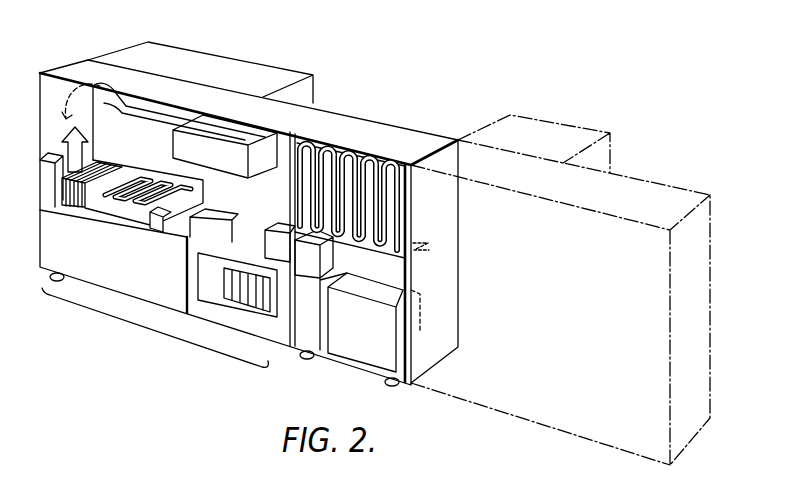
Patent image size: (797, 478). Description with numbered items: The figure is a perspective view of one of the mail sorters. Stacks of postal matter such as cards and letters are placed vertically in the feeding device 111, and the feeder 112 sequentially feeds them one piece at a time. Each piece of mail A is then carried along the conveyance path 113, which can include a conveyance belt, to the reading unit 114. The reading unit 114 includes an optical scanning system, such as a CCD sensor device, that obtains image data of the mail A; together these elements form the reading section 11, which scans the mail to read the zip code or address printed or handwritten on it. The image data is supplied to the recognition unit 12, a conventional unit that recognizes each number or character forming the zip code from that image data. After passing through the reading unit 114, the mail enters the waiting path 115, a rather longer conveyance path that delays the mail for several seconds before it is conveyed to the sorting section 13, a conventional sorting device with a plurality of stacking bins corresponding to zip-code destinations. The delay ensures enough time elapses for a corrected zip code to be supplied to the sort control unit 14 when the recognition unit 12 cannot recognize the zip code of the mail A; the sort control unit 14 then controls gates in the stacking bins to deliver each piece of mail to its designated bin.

The reading section 11 is at (138, 358).
The recognition unit 12 is at (248, 73).
The sorting section 13 is at (502, 391).
The sort control unit 14 is at (553, 129).
The feeding device 111 is at (100, 209).
The feeder 112 is at (90, 165).
The conveyance path 113 is at (142, 112).
The reading unit 114 is at (222, 157).
The waiting path 115 is at (358, 168).
The mail A is at (66, 196).